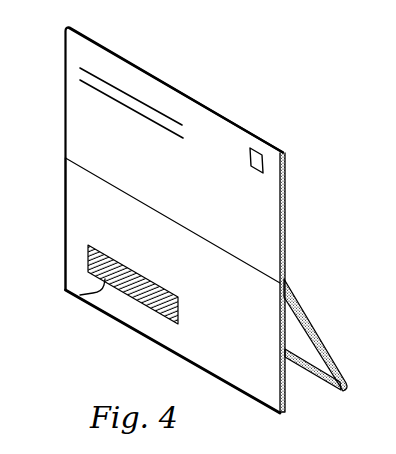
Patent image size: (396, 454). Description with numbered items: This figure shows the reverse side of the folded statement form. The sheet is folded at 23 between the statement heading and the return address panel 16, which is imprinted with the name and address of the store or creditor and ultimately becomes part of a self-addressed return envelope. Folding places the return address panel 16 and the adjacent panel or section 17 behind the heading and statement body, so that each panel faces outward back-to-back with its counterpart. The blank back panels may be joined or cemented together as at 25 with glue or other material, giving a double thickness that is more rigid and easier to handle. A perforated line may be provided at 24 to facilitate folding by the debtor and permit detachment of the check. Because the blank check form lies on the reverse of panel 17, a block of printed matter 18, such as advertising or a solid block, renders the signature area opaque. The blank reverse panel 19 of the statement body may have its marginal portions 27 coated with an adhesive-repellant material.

The return address panel 16 is at (260, 203).
The panel or section 17 is at (80, 200).
The block of printed matter 18 is at (80, 295).
The reverse side or panel of the statement body 19 is at (305, 358).
The fold 23 is at (201, 104).
The perforated line 24 is at (78, 165).
The cementing 25 is at (280, 247).
The marginal portions 27 is at (307, 323).